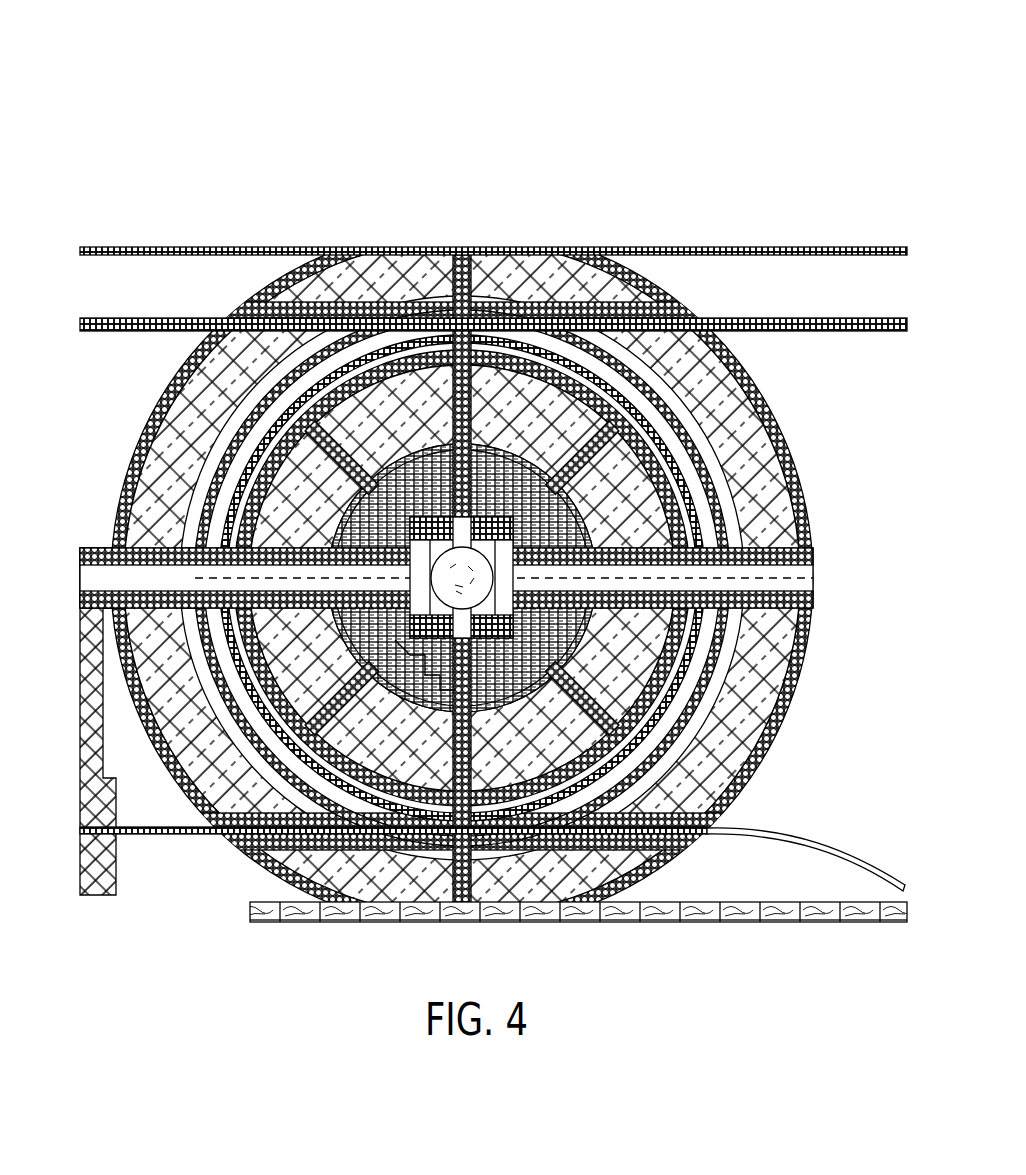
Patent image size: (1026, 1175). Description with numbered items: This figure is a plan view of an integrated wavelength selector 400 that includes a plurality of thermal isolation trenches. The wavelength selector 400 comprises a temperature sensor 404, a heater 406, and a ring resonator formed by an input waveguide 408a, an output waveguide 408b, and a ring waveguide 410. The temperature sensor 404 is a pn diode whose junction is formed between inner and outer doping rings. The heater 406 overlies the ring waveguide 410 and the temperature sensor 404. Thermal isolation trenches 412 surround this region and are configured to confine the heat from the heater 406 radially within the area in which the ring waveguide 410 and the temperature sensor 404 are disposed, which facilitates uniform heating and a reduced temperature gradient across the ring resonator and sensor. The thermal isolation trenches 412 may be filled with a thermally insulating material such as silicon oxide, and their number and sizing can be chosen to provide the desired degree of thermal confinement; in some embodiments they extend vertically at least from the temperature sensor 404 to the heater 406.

The integrated wavelength selector 400 is at (166, 90).
The temperature sensor 404 is at (392, 362).
The heater 406 is at (203, 487).
The ring waveguide 410 is at (206, 526).
The thermal isolation trenches 412 is at (615, 425).
The input waveguide 408a is at (198, 832).
The output waveguide 408b is at (196, 328).